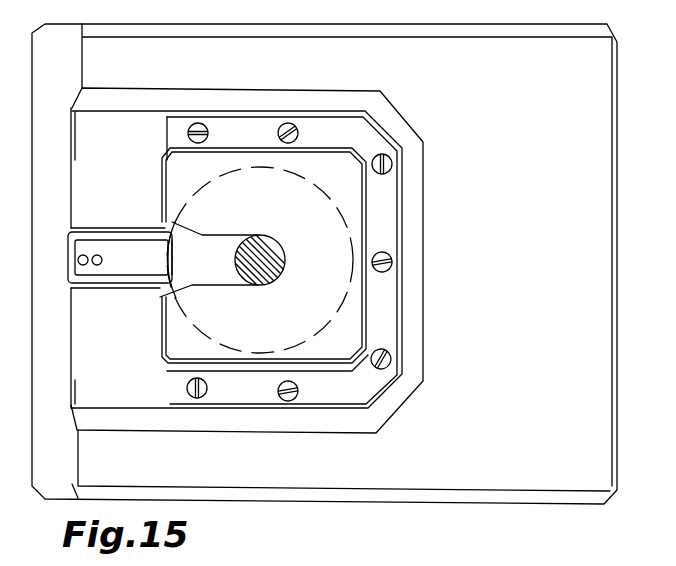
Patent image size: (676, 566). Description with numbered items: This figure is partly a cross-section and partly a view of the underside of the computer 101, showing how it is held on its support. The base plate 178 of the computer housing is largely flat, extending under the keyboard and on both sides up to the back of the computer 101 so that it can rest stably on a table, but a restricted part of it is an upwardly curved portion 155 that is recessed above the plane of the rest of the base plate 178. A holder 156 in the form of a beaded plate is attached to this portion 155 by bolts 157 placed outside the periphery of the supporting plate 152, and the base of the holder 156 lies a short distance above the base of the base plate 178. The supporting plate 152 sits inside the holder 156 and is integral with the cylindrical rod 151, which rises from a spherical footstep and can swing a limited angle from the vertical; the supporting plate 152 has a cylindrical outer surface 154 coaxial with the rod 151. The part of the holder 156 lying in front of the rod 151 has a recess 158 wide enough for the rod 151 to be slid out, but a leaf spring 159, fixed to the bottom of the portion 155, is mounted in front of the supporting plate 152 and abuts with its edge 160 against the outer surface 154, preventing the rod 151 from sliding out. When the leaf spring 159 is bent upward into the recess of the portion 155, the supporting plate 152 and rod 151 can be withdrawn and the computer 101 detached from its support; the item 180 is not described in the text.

The computer 101 is at (620, 207).
The cylindrical rod 151 is at (286, 255).
The supporting plate 152 is at (213, 278).
The cylindrical outer surface 154 is at (332, 202).
The upwardly curved portion 155 is at (128, 401).
The holder 156 is at (160, 181).
The bolts 157 is at (278, 133).
The recess 158 is at (236, 236).
The leaf spring 159 is at (128, 247).
The edge of the leaf spring 160 is at (168, 261).
The base plate 178 is at (126, 76).
The panel face 180 is at (449, 556).